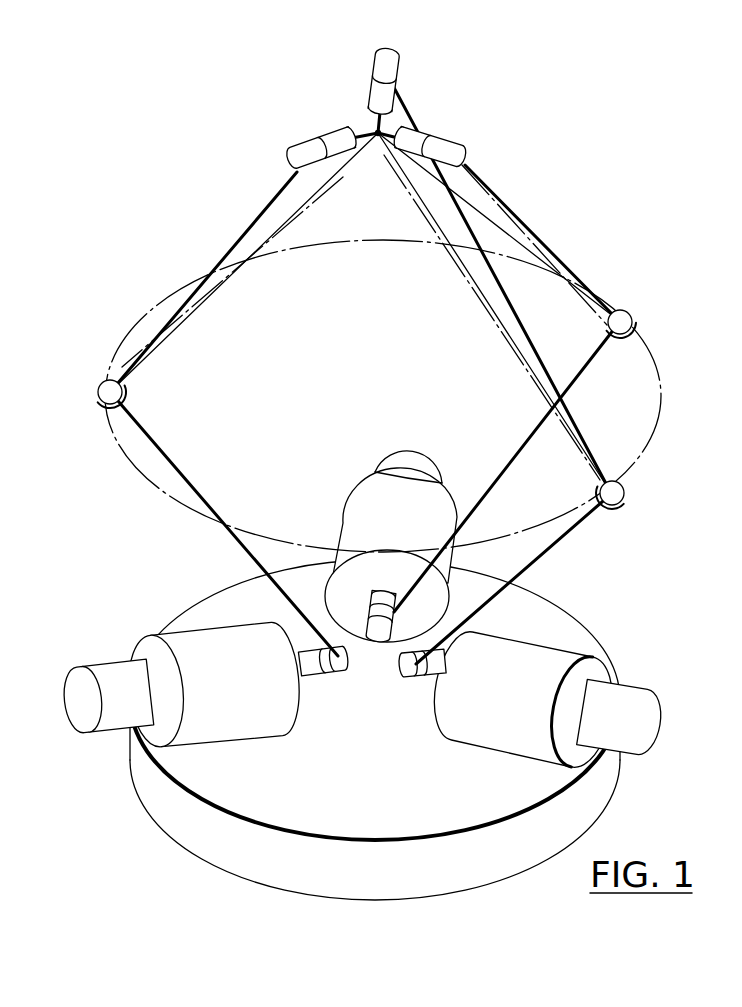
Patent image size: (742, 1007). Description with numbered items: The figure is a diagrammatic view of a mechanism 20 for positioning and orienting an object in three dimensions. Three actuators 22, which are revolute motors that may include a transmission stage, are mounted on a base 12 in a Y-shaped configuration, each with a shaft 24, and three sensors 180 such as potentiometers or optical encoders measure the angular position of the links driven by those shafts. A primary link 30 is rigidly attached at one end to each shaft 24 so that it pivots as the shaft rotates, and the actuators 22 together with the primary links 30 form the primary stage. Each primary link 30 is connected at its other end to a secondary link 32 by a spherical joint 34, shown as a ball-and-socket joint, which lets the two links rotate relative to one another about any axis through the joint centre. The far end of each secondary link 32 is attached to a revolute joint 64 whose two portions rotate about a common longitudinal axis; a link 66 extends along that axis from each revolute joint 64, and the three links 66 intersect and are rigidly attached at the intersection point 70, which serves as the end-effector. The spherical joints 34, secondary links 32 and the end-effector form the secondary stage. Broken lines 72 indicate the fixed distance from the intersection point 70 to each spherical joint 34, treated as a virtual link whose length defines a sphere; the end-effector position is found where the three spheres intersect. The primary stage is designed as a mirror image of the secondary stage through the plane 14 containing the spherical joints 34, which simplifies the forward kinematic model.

The base 12 is at (173, 823).
The mirror plane 14 is at (136, 472).
The positioning mechanism 20 is at (534, 134).
The actuator 22 is at (243, 724).
The shaft 24 is at (378, 638).
The primary link 30 is at (172, 463).
The secondary link 32 is at (430, 142).
The spherical joint 34 is at (103, 372).
The revolute joint 64 is at (380, 68).
The link 66 is at (388, 128).
The intersection point 70 is at (378, 142).
The virtual link 72 is at (205, 307).
The sensor 180 is at (393, 463).